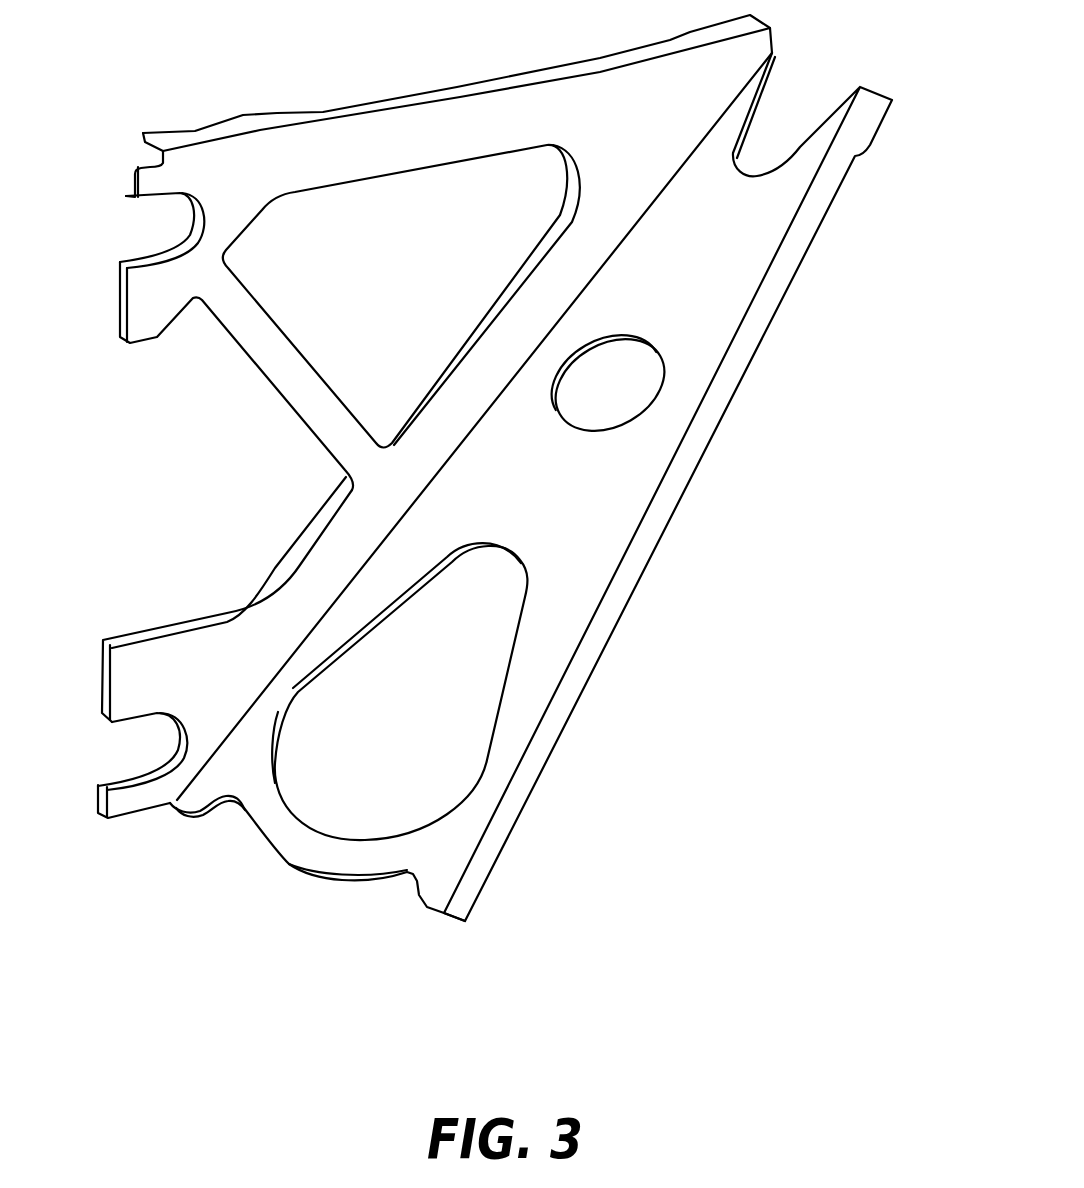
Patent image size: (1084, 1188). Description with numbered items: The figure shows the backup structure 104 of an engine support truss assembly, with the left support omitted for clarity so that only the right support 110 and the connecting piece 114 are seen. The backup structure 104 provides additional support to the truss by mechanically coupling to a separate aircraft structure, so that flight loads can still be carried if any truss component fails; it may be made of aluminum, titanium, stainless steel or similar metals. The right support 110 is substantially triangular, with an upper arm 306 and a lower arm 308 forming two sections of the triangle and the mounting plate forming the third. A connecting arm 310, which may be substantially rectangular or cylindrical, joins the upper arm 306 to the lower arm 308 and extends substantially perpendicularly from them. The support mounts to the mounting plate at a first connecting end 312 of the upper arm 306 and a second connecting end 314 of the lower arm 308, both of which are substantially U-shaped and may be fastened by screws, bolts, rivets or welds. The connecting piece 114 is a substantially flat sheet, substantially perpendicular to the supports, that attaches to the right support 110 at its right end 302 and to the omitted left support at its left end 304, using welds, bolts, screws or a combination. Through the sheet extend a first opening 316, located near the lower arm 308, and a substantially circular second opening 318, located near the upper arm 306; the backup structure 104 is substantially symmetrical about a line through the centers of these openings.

The backup structure 104 is at (502, 484).
The right support 110 is at (397, 130).
The connecting piece 114 is at (290, 835).
The right end 302 is at (490, 412).
The left end 304 is at (637, 533).
The upper arm 306 is at (282, 167).
The lower arm 308 is at (250, 653).
The connecting arm 310 is at (282, 377).
The first connecting end 312 is at (127, 194).
The second connecting end 314 is at (118, 667).
The first opening 316 is at (466, 704).
The second opening 318 is at (620, 373).